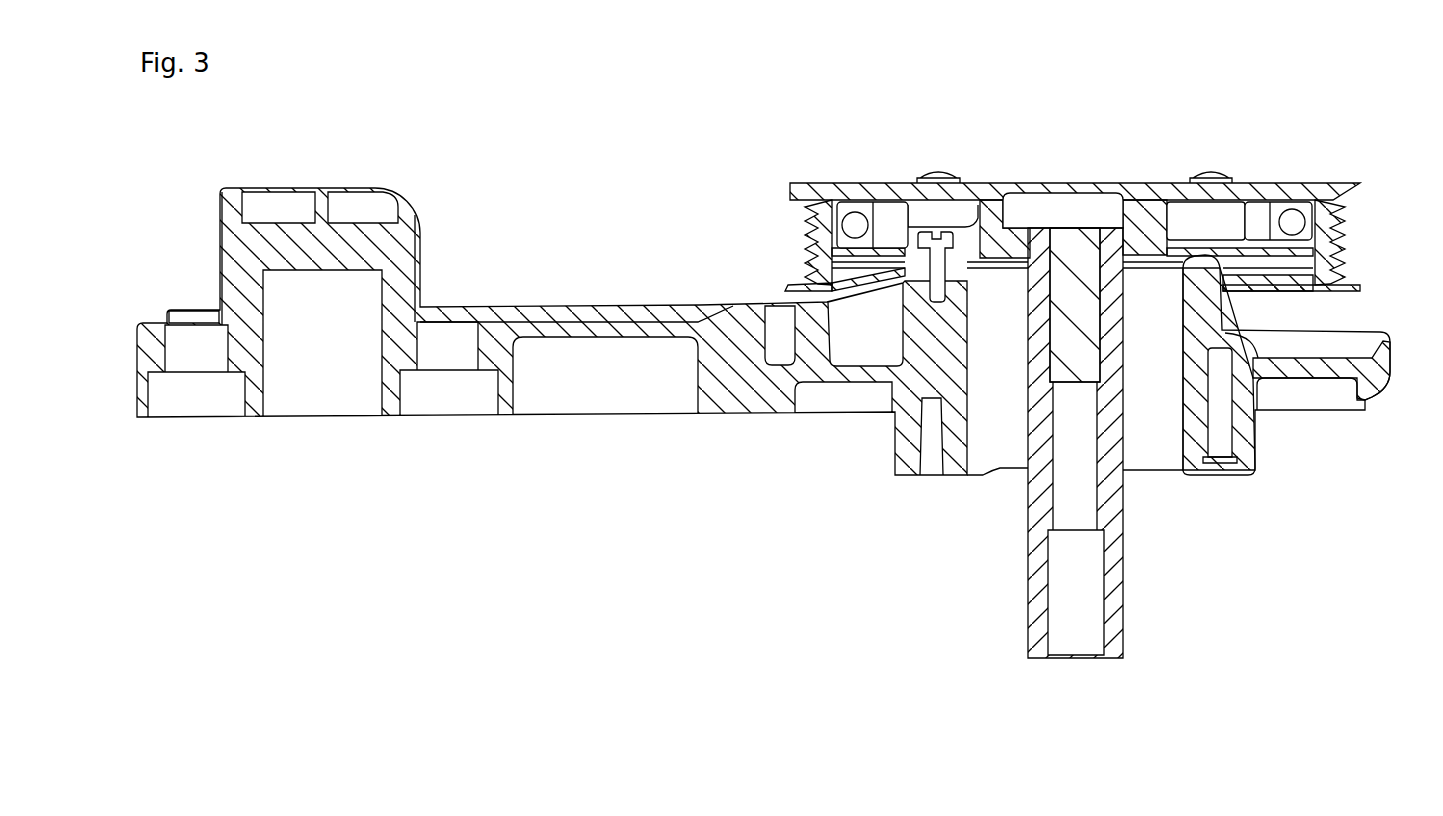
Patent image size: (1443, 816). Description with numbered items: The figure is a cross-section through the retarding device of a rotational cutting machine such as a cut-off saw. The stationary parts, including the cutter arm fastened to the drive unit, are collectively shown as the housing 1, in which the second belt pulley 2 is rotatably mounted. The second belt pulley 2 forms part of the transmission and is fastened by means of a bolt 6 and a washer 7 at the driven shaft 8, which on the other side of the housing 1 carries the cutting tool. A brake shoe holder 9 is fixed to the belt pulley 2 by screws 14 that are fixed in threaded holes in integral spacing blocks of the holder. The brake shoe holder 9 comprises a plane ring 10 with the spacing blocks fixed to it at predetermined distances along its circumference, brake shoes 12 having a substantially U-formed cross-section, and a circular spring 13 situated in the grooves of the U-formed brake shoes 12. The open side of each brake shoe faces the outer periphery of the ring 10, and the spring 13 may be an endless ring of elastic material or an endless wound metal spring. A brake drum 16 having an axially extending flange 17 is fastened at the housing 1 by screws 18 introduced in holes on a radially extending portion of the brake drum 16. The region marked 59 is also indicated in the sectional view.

The housing 1 is at (1388, 372).
The second belt pulley 2 is at (1372, 146).
The bolt 6 is at (1075, 218).
The washer 7 is at (1122, 228).
The driven shaft 8 is at (1123, 568).
The brake shoe holder 9 is at (1037, 229).
The plane ring 10 is at (803, 273).
The brake shoes 12 is at (1263, 220).
The circular spring 13 is at (1313, 226).
The screws 14 is at (955, 172).
The brake drum 16 is at (1072, 258).
The axially extending flange 17 is at (922, 213).
The screws 18 is at (955, 250).
The cavity 59 is at (1150, 348).